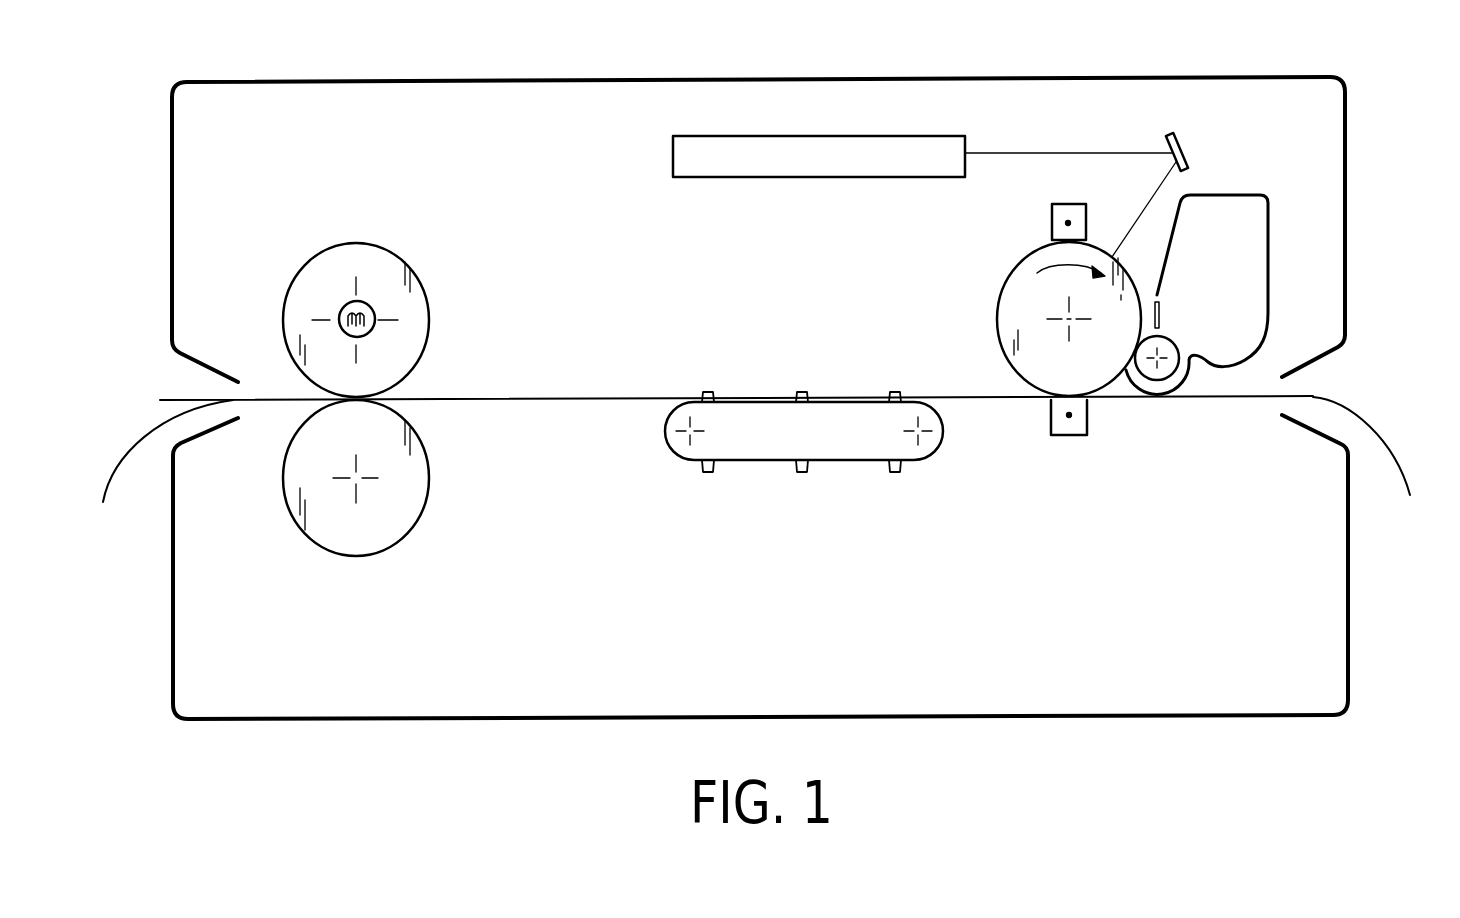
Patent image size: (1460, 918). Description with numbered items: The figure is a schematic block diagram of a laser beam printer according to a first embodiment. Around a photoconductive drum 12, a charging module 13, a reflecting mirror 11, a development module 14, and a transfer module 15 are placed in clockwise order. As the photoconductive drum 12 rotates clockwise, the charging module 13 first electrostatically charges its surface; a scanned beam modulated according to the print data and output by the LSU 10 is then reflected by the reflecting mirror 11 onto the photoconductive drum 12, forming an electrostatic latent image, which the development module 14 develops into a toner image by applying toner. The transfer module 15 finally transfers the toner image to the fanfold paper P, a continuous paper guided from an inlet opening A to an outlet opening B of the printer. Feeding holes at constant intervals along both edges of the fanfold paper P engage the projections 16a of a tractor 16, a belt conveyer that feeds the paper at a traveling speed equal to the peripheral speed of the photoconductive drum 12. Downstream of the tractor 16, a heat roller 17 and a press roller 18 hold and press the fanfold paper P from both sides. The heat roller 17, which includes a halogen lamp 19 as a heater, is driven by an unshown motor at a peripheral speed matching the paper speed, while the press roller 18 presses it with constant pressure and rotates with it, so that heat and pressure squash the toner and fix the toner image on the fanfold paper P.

The LSU (Laser Scanning Unit) 10 is at (768, 178).
The reflecting mirror 11 is at (1190, 152).
The photoconductive drum 12 is at (997, 300).
The charging module 13 is at (1050, 213).
The development module 14 is at (1272, 260).
The transfer module 15 is at (1087, 420).
The tractor 16 is at (850, 462).
The projections 16a is at (803, 392).
The heat roller 17 is at (390, 252).
The press roller 18 is at (328, 556).
The halogen lamp 19 is at (338, 308).
The inlet opening A is at (1374, 396).
The outlet opening B is at (170, 388).
The fanfold paper P is at (1312, 396).